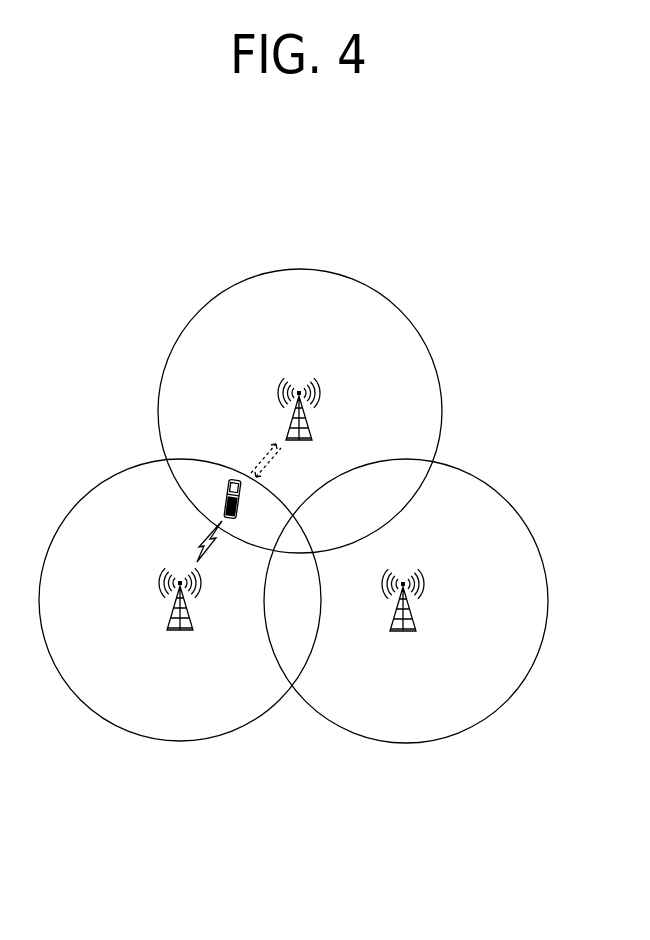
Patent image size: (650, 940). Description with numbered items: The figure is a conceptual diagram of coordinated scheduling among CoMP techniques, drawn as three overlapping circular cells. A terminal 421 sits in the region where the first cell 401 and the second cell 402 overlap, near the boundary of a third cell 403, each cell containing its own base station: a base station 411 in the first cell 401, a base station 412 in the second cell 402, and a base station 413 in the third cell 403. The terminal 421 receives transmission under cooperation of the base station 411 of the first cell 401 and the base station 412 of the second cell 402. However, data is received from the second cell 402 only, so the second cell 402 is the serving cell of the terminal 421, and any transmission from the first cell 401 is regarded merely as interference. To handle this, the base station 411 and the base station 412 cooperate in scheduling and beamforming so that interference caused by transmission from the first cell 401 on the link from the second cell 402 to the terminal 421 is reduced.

The first cell 401 is at (361, 297).
The second cell 402 is at (122, 718).
The third cell coverage area 403 is at (478, 706).
The base station of the first cell 411 is at (312, 418).
The base station of the second cell 412 is at (166, 612).
The third base station 413 is at (420, 612).
The terminal 421 is at (232, 481).